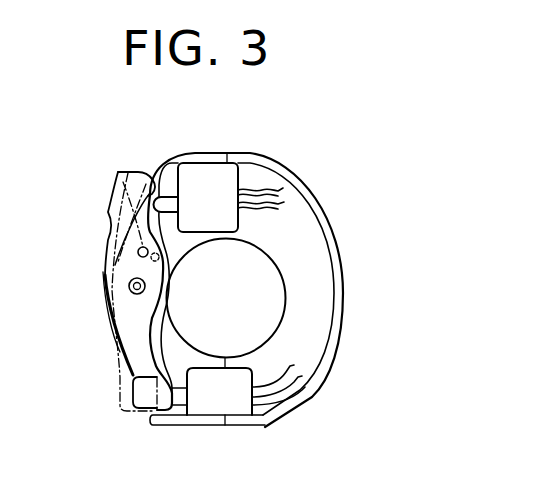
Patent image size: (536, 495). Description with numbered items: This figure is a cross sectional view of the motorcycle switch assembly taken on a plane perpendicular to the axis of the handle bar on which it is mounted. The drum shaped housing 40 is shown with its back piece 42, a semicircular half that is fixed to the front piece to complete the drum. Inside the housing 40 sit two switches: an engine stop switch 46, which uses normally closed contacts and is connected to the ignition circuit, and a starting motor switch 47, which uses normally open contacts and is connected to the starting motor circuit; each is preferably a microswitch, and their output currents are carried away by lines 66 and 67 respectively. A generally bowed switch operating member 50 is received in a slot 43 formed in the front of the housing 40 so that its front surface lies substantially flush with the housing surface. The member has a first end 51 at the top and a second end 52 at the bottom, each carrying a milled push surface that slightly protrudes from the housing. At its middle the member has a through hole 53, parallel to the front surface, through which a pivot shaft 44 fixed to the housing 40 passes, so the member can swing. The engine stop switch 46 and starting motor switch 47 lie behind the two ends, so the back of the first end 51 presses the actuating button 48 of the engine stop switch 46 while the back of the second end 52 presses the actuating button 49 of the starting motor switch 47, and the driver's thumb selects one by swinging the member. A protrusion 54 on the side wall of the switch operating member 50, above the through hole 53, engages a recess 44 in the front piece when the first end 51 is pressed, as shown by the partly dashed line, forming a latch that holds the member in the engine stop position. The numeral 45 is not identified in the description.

The housing 40 is at (368, 212).
The back piece 42 is at (338, 344).
The slot 43 is at (151, 190).
The pivot shaft 44 is at (108, 224).
The mounting hole 45 is at (128, 287).
The engine stop switch 46 is at (225, 180).
The starting motor switch 47 is at (240, 406).
The actuating button 48 is at (162, 201).
The actuating button 49 is at (180, 398).
The switch operating member 50 is at (122, 335).
The first end 51 is at (123, 188).
The second end 52 is at (163, 422).
The through hole 53 is at (131, 296).
The protrusion 54 is at (138, 253).
The line 66 is at (278, 205).
The line 67 is at (294, 403).